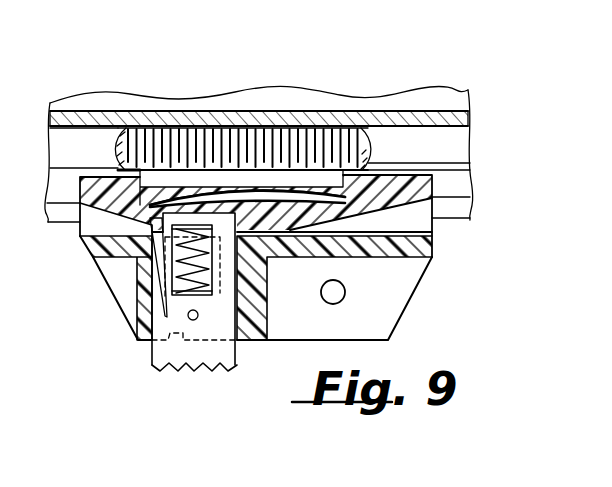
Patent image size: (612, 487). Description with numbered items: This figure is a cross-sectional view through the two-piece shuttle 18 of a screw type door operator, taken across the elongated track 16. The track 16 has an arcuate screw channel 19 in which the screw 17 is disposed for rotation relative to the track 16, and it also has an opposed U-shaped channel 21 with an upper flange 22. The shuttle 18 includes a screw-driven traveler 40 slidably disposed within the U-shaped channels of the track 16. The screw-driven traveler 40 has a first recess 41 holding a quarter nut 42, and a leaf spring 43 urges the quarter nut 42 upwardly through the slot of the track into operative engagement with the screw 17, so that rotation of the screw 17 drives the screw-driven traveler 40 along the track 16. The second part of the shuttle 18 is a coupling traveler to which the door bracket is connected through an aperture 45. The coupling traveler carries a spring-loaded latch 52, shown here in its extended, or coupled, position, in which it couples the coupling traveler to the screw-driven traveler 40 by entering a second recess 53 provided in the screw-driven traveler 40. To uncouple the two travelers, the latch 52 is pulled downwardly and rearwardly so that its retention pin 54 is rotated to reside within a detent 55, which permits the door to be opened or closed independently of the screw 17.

The elongated track 16 is at (40, 189).
The screw 17 is at (248, 135).
The shuttle 18 is at (425, 289).
The arcuate screw channel 19 is at (390, 131).
The U-shaped channel 21 is at (466, 193).
The upper flange 22 is at (471, 208).
The screw-driven traveler 40 is at (441, 185).
The first recess 41 is at (381, 166).
The quarter nut 42 is at (327, 177).
The leaf spring 43 is at (295, 193).
The aperture 45 is at (344, 287).
The spring-loaded latch 52 is at (208, 364).
The second recess 53 is at (241, 212).
The retention pin 54 is at (198, 316).
The detent 55 is at (153, 357).